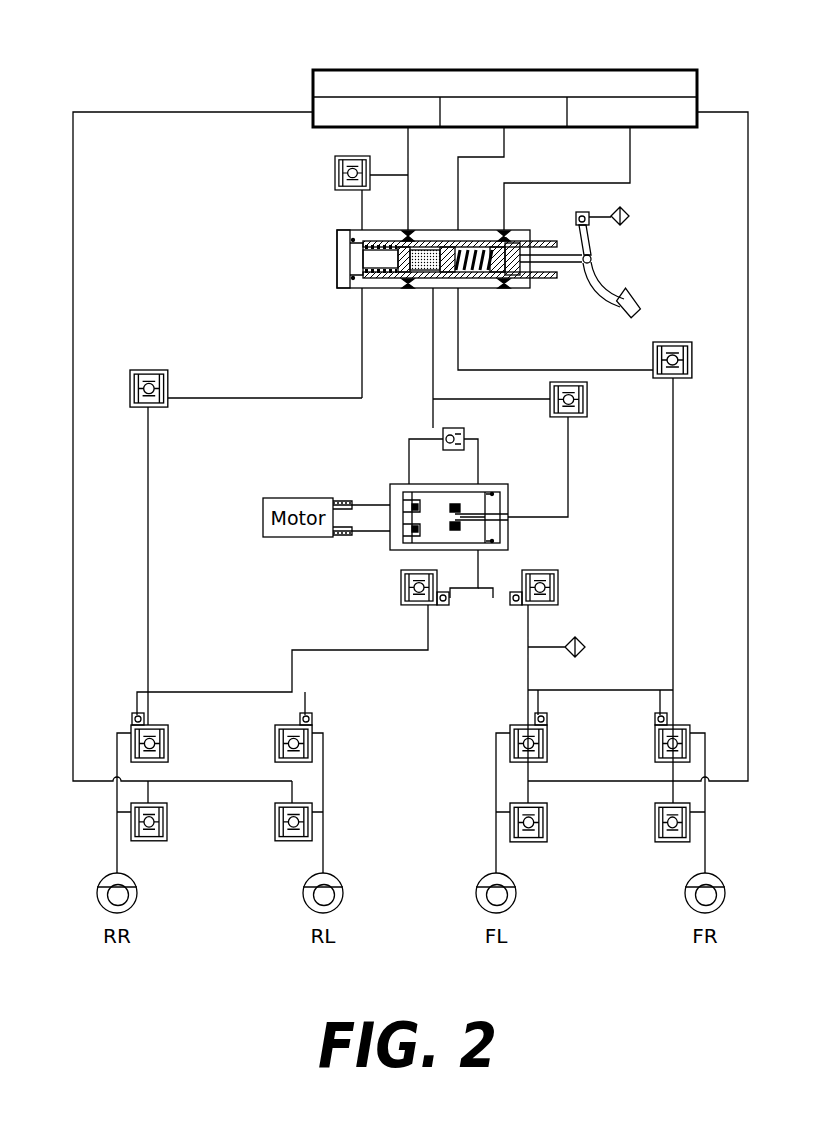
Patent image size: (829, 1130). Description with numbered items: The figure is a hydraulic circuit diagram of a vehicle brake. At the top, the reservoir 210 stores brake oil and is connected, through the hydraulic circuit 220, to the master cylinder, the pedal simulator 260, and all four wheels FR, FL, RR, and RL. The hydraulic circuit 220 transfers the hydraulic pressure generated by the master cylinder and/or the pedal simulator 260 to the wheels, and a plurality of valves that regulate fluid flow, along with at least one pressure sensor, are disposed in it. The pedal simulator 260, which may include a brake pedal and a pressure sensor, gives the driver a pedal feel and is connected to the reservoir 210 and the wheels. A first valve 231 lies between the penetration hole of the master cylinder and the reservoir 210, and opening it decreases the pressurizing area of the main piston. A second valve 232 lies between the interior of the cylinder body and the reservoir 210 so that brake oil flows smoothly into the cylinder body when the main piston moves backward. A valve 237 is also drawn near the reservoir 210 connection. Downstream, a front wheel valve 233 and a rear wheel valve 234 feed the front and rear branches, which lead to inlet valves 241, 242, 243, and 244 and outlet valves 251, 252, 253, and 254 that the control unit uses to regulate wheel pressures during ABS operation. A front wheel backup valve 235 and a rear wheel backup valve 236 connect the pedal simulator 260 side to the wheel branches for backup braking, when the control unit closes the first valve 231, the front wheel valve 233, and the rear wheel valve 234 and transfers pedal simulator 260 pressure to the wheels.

The reservoir 210 is at (565, 70).
The hydraulic circuit 220 is at (124, 68).
The first valve 231 is at (587, 400).
The second valve 232 is at (464, 432).
The front wheel valve 233 is at (558, 590).
The rear wheel valve 234 is at (401, 587).
The front wheel backup valve 235 is at (672, 342).
The rear wheel backup valve 236 is at (148, 370).
The simulator valve 237 is at (335, 172).
The inlet valve 241 is at (655, 748).
The inlet valve 242 is at (547, 740).
The inlet valve 243 is at (168, 740).
The inlet valve 244 is at (275, 748).
The outlet valve 251 is at (655, 825).
The outlet valve 252 is at (547, 817).
The outlet valve 253 is at (167, 817).
The outlet valve 254 is at (275, 825).
The pedal simulator 260 is at (626, 269).